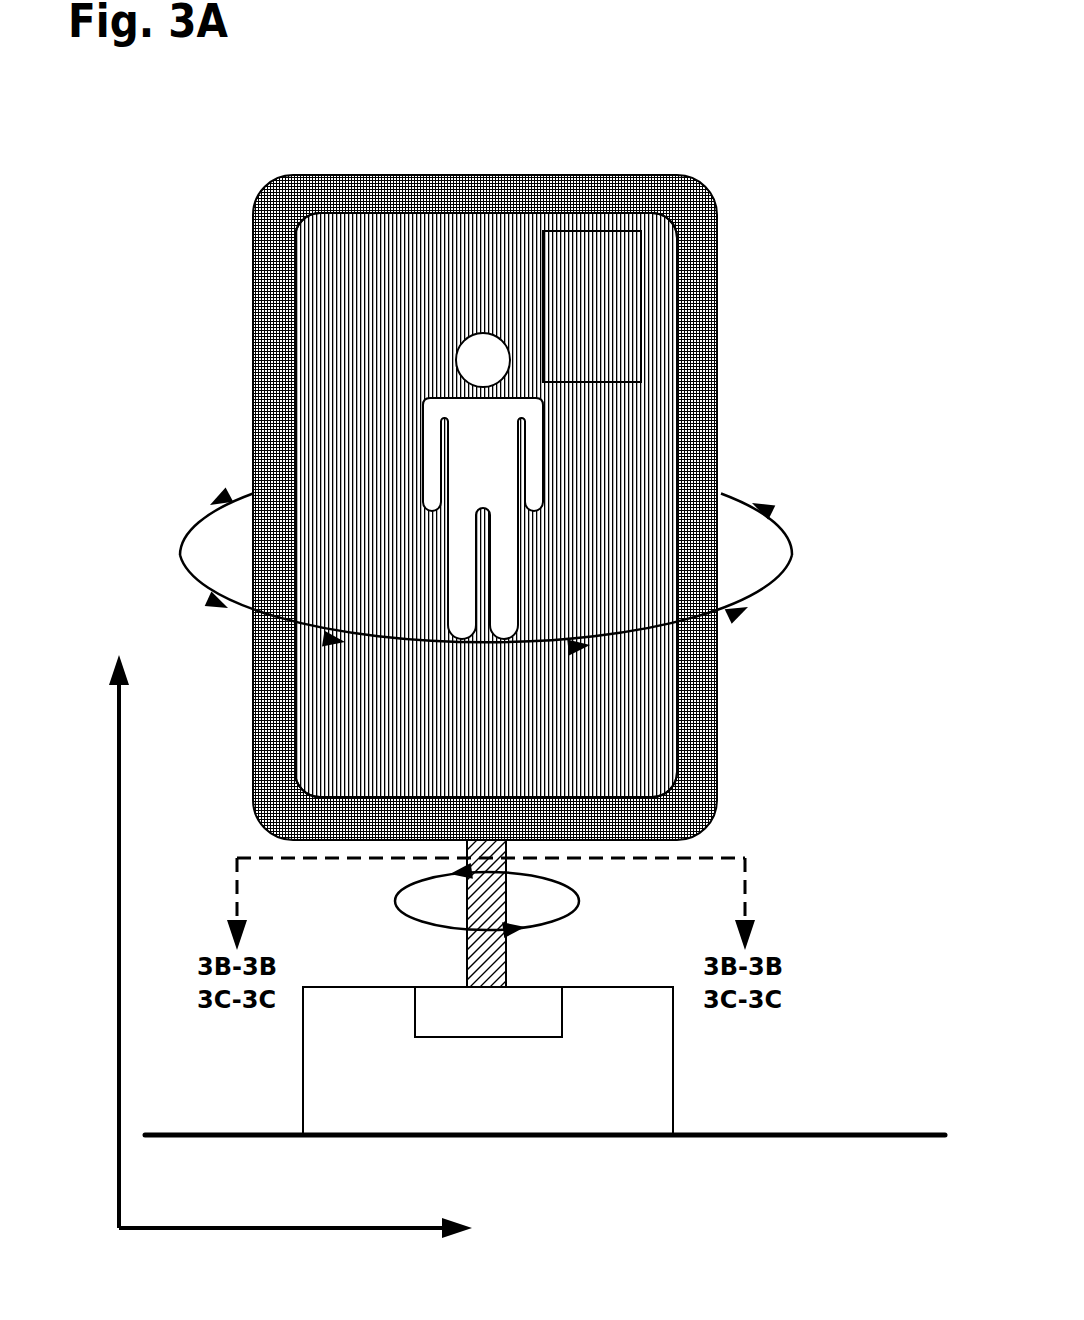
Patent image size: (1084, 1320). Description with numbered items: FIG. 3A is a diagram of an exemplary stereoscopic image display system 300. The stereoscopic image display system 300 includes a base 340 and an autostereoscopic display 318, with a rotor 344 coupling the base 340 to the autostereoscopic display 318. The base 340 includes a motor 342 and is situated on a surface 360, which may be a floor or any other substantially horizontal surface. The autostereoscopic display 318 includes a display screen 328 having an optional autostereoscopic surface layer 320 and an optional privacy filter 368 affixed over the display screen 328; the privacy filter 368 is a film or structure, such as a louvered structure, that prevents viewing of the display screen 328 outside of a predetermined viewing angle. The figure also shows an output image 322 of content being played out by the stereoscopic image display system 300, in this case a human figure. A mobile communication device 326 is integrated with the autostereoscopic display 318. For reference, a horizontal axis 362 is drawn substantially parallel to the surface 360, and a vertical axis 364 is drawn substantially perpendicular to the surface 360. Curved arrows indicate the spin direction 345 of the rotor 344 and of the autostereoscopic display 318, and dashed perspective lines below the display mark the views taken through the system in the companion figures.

The stereoscopic image display system 300 is at (888, 75).
The autostereoscopic display 318 is at (486, 505).
The autostereoscopic surface layer 320 is at (315, 327).
The output image 322 is at (483, 486).
The mobile communication device 326 is at (340, 195).
The display screen 328 is at (656, 432).
The base 340 is at (673, 1093).
The motor 342 is at (488, 1012).
The rotor 344 is at (467, 968).
The spin direction 345 is at (778, 600).
The surface 360 is at (870, 1133).
The horizontal axis 362 is at (285, 1226).
The vertical axis 364 is at (117, 860).
The privacy filter 368 is at (640, 316).